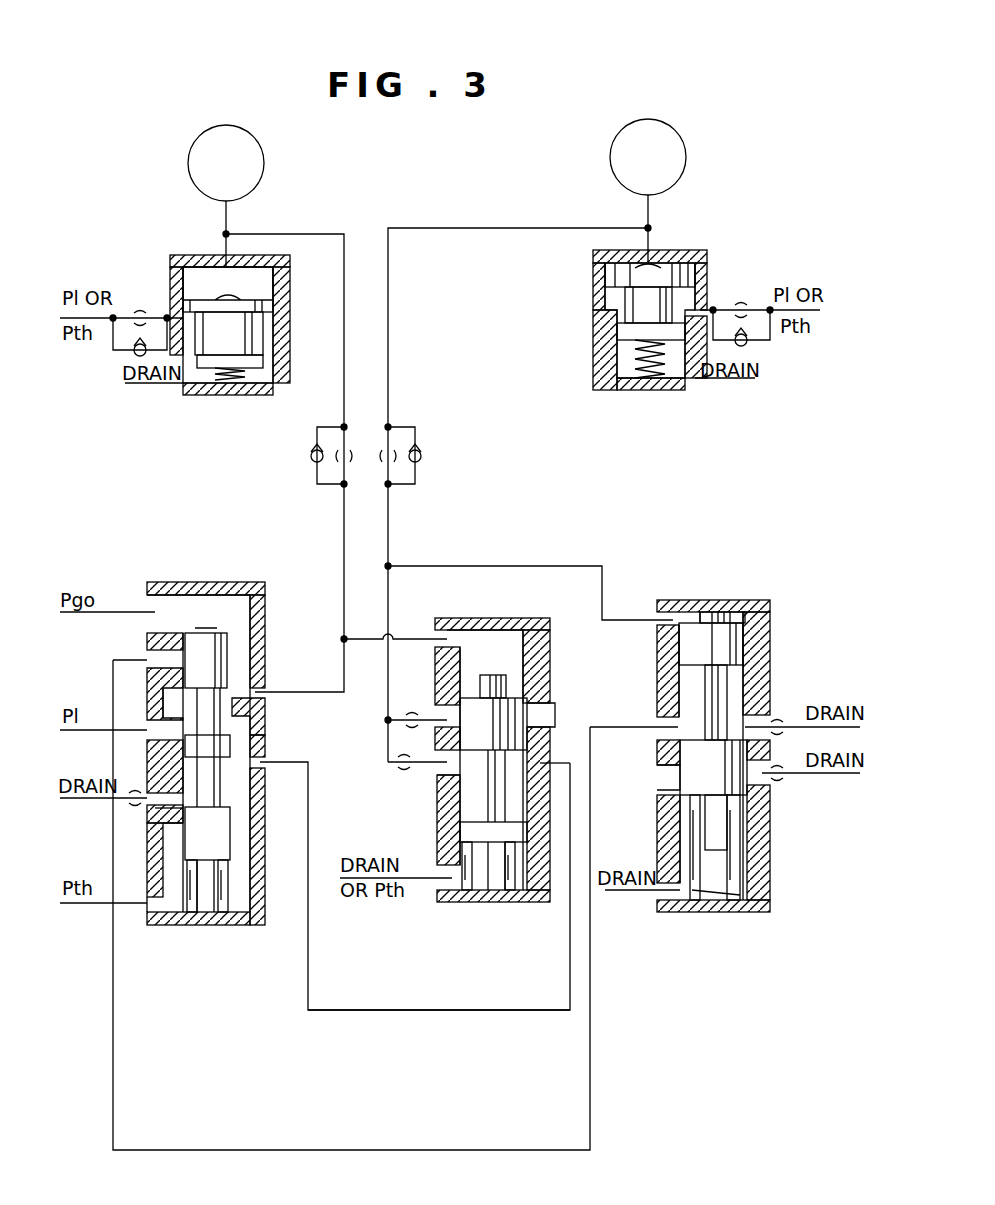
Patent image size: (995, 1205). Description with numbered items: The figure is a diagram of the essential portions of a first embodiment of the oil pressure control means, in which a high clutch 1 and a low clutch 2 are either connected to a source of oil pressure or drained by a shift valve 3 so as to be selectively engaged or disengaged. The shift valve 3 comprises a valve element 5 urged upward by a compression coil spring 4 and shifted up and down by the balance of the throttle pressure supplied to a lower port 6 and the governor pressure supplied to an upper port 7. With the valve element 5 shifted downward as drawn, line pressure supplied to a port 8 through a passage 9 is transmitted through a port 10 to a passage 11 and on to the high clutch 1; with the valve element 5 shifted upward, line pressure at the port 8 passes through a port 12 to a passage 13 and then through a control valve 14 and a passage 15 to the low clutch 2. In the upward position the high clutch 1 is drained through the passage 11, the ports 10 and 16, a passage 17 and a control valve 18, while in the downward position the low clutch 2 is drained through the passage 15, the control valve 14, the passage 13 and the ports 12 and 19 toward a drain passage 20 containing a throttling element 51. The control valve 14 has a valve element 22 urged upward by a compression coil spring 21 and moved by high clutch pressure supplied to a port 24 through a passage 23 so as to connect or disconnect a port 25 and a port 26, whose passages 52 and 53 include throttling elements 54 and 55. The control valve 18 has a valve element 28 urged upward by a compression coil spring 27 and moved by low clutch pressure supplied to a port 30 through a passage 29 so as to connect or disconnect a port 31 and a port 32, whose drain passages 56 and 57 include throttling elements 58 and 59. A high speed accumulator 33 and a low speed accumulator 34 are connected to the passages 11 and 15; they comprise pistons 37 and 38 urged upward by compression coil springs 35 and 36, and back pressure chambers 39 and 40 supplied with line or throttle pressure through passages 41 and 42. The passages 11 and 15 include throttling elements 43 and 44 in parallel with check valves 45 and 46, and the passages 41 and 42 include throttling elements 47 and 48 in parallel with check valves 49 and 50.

The high clutch 1 is at (258, 182).
The low clutch 2 is at (680, 176).
The shift valve 3 is at (250, 580).
The compression coil spring 4 is at (188, 905).
The valve element 5 is at (225, 838).
The lower port 6 is at (149, 907).
The upper port 7 is at (150, 610).
The port 8 is at (160, 720).
The passage 9 is at (100, 730).
The port 10 is at (262, 696).
The passage 11 is at (342, 530).
The port 12 is at (262, 766).
The passage 13 is at (428, 1010).
The control valve 14 is at (487, 616).
The passage 15 is at (397, 528).
The port 16 is at (140, 658).
The passage 17 is at (345, 1150).
The control valve 18 is at (726, 598).
The drain port 19 is at (149, 810).
The drain passage 20 is at (98, 798).
The compression coil spring 21 is at (468, 880).
The valve element 22 is at (466, 697).
The passage 23 is at (360, 639).
The port 24 is at (420, 639).
The port 25 is at (548, 760).
The port 26 is at (410, 710).
The compression coil spring 27 is at (692, 895).
The valve element 28 is at (738, 645).
The passage 29 is at (625, 620).
The port 30 is at (672, 624).
The port 31 is at (659, 727).
The port 32 is at (752, 770).
The high speed accumulator 33 is at (197, 265).
The low speed accumulator 34 is at (672, 262).
The compression coil spring 35 is at (258, 376).
The compression coil spring 36 is at (632, 372).
The piston 37 is at (255, 300).
The piston 38 is at (620, 267).
The back pressure chamber 39 is at (258, 330).
The back pressure chamber 40 is at (685, 292).
The passage 41 is at (100, 332).
The passage 42 is at (764, 308).
The throttling element 43 is at (352, 456).
The throttling element 44 is at (382, 456).
The check valve 45 is at (310, 462).
The check valve 46 is at (421, 460).
The throttling element 47 is at (136, 310).
The throttling element 48 is at (740, 309).
The check valve 49 is at (134, 352).
The check valve 50 is at (746, 345).
The throttling element 51 is at (135, 790).
The passage 52 is at (402, 768).
The passage 53 is at (418, 732).
The throttling element 54 is at (392, 765).
The throttling element 55 is at (392, 725).
The drain passage 56 is at (764, 733).
The drain passage 57 is at (812, 780).
The throttling element 58 is at (776, 706).
The throttling element 59 is at (777, 783).